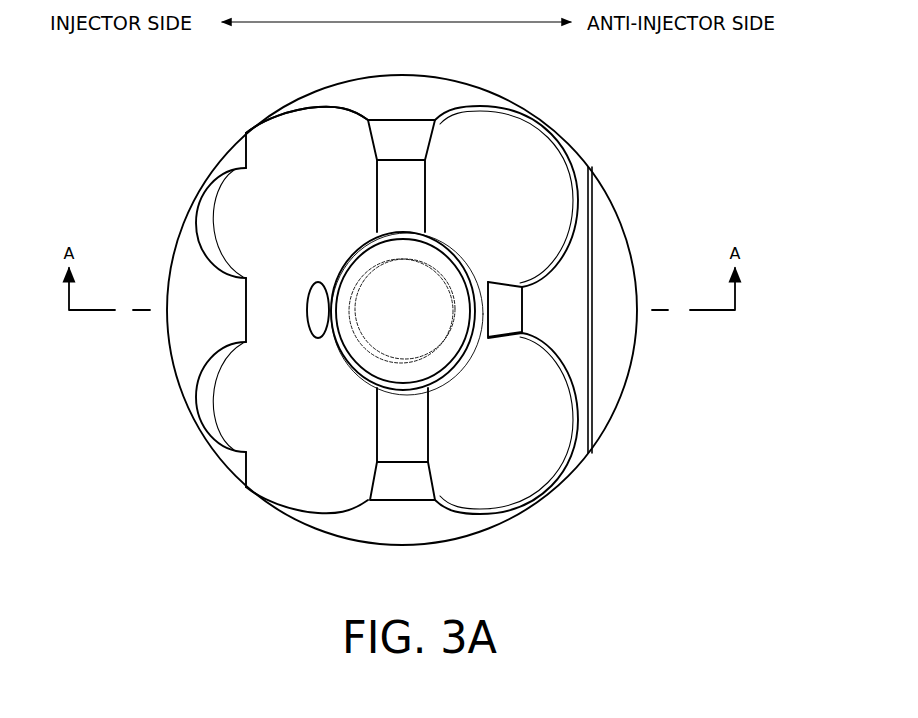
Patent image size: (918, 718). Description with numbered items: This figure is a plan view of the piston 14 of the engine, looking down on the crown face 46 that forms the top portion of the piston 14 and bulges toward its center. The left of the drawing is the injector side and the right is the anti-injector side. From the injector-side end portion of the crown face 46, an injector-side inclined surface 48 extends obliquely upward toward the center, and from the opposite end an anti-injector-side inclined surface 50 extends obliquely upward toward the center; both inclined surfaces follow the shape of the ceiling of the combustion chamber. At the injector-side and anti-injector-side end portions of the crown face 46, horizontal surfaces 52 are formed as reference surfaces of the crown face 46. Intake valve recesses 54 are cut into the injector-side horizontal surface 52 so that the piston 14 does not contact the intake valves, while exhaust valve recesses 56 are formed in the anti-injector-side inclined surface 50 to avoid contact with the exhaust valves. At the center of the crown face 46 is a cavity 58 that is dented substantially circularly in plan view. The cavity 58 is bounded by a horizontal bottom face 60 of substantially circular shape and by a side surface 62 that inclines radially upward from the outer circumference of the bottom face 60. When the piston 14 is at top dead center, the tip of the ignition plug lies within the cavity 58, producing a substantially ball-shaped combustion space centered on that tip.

The piston 14 is at (608, 193).
The crown face 46 is at (192, 280).
The injector-side inclined surface 48 is at (293, 157).
The anti-injector-side inclined surface 50 is at (484, 168).
The horizontal surface 52 is at (197, 322).
The intake valve recess 54 is at (207, 215).
The exhaust valve recess 56 is at (553, 197).
The cavity 58 is at (417, 250).
The bottom face 60 is at (397, 318).
The side surface 62 is at (455, 345).